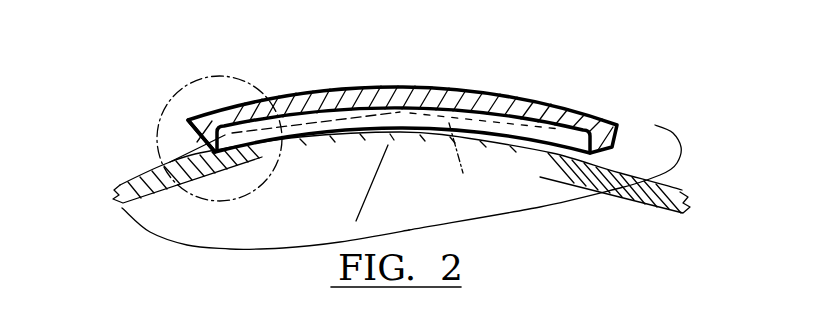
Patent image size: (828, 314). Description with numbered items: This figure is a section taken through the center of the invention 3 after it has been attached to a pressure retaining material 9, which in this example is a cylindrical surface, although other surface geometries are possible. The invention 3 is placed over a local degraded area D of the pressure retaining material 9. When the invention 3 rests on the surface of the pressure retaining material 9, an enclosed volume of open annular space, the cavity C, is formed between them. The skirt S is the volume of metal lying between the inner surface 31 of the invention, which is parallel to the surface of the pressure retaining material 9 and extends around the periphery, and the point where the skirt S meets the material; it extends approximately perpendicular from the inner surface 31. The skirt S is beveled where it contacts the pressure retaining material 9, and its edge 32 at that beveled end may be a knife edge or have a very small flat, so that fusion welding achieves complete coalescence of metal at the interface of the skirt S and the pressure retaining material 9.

The cover assembly 3 is at (166, 100).
The pressure retaining material 9 is at (167, 168).
The inner surface 31 is at (339, 112).
The edge 32 is at (213, 150).
The degraded area D is at (386, 152).
The cavity C is at (491, 132).
The skirt S is at (631, 158).